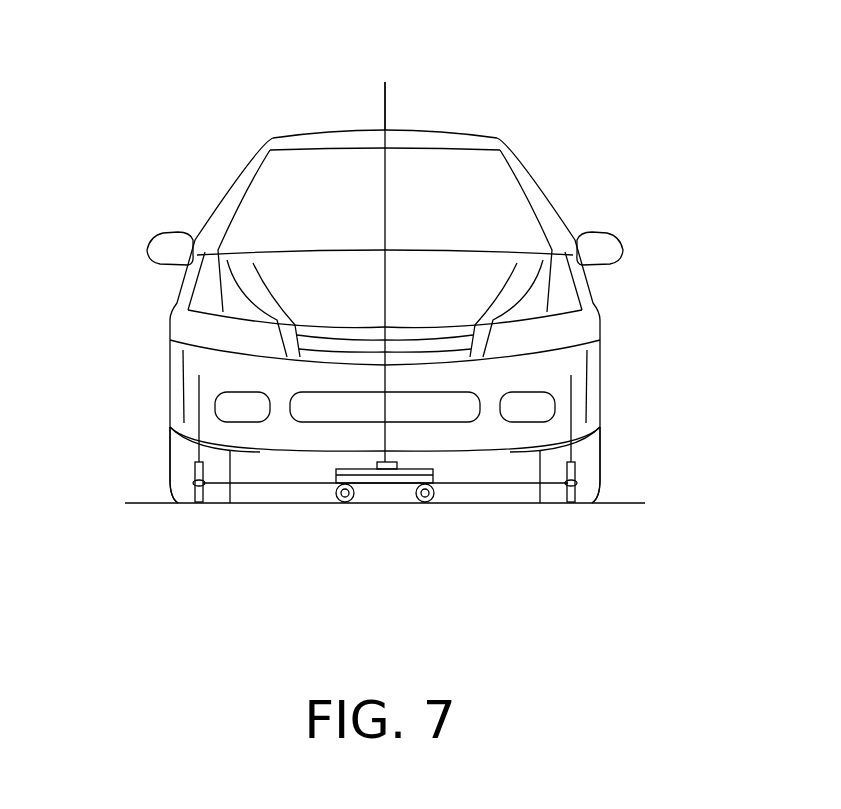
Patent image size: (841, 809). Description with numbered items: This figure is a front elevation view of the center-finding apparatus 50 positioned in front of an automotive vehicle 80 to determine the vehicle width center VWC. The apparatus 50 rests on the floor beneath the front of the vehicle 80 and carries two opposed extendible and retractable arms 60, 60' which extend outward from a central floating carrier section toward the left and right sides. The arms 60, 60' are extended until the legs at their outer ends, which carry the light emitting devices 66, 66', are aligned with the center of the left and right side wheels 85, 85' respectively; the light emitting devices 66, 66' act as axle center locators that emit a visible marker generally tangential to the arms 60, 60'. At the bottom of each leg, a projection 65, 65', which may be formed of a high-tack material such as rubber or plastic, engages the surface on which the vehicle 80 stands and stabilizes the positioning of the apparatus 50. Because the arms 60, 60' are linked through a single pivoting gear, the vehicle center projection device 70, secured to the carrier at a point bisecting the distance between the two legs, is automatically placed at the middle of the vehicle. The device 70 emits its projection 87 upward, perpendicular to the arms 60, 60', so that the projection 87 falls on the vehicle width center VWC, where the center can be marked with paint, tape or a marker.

The vehicle 80 is at (283, 108).
The vehicle width center VWC is at (385, 82).
The projection 87 is at (386, 105).
The left side wheel 85 is at (156, 463).
The right side wheel 85' is at (616, 463).
The light emitting device 66 is at (129, 479).
The light emitting device 66' is at (643, 481).
The projection 65 is at (170, 536).
The projection 65' is at (602, 537).
The extendible and retractable arm 60 is at (292, 546).
The extendible and retractable arm 60' is at (476, 547).
The apparatus 50 is at (323, 492).
The vehicle center projection device 70 is at (372, 463).